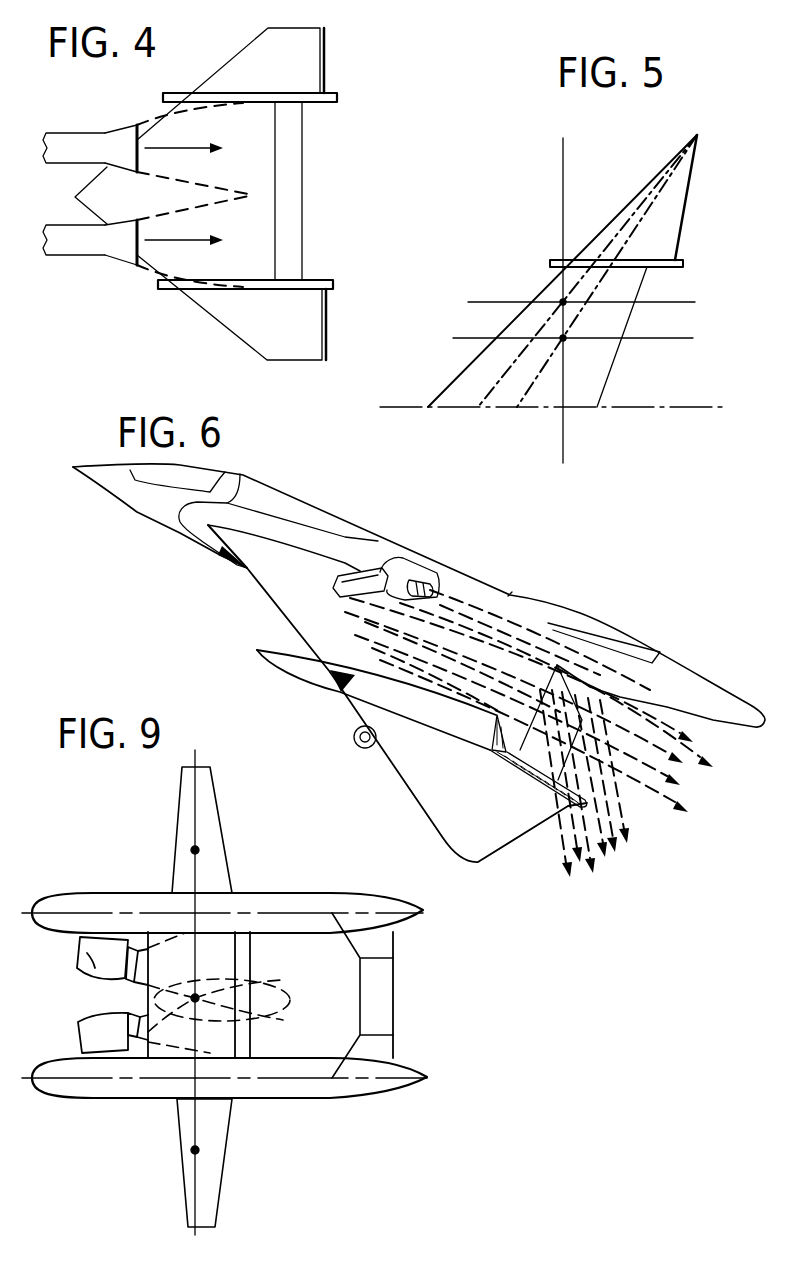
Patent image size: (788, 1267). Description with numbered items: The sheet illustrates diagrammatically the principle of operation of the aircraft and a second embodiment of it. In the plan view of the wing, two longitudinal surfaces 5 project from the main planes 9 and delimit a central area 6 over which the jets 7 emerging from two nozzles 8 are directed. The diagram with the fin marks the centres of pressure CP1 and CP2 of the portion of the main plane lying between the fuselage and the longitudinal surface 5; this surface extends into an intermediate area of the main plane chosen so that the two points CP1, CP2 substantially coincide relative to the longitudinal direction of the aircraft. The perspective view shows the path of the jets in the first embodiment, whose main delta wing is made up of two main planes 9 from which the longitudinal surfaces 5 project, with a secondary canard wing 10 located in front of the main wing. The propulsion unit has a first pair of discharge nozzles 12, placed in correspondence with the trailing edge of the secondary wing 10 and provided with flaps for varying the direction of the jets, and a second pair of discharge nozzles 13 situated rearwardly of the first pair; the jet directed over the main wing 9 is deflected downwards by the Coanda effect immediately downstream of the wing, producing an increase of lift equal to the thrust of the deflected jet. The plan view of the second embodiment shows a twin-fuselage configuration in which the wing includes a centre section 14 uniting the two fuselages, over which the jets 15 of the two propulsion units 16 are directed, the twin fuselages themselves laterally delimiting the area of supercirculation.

In FIG. 4, the longitudinal surface 5 is at (262, 97).
In FIG. 5, the longitudinal surface 5 is at (632, 268).
In FIG. 6, the longitudinal surface 5 is at (467, 716).
In FIG. 4, the central area 6 is at (238, 180).
In FIG. 4, the jet 7 is at (165, 137).
In FIG. 6, the jet 7 is at (347, 692).
In FIG. 4, the nozzle 8 is at (67, 150).
In FIG. 6, the main plane 9 is at (343, 637).
In FIG. 6, the secondary canard wing 10 is at (302, 581).
In FIG. 6, the first pair of discharge nozzles 12 is at (362, 572).
In FIG. 6, the second pair of discharge nozzles 13 is at (403, 570).
In FIG. 9, the centre section 14 is at (217, 997).
In FIG. 9, the jet 15 is at (168, 967).
In FIG. 9, the propulsion unit 16 is at (93, 955).
In FIG. 5, the centre of pressure CP1 is at (562, 300).
In FIG. 5, the centre of pressure CP2 is at (564, 340).